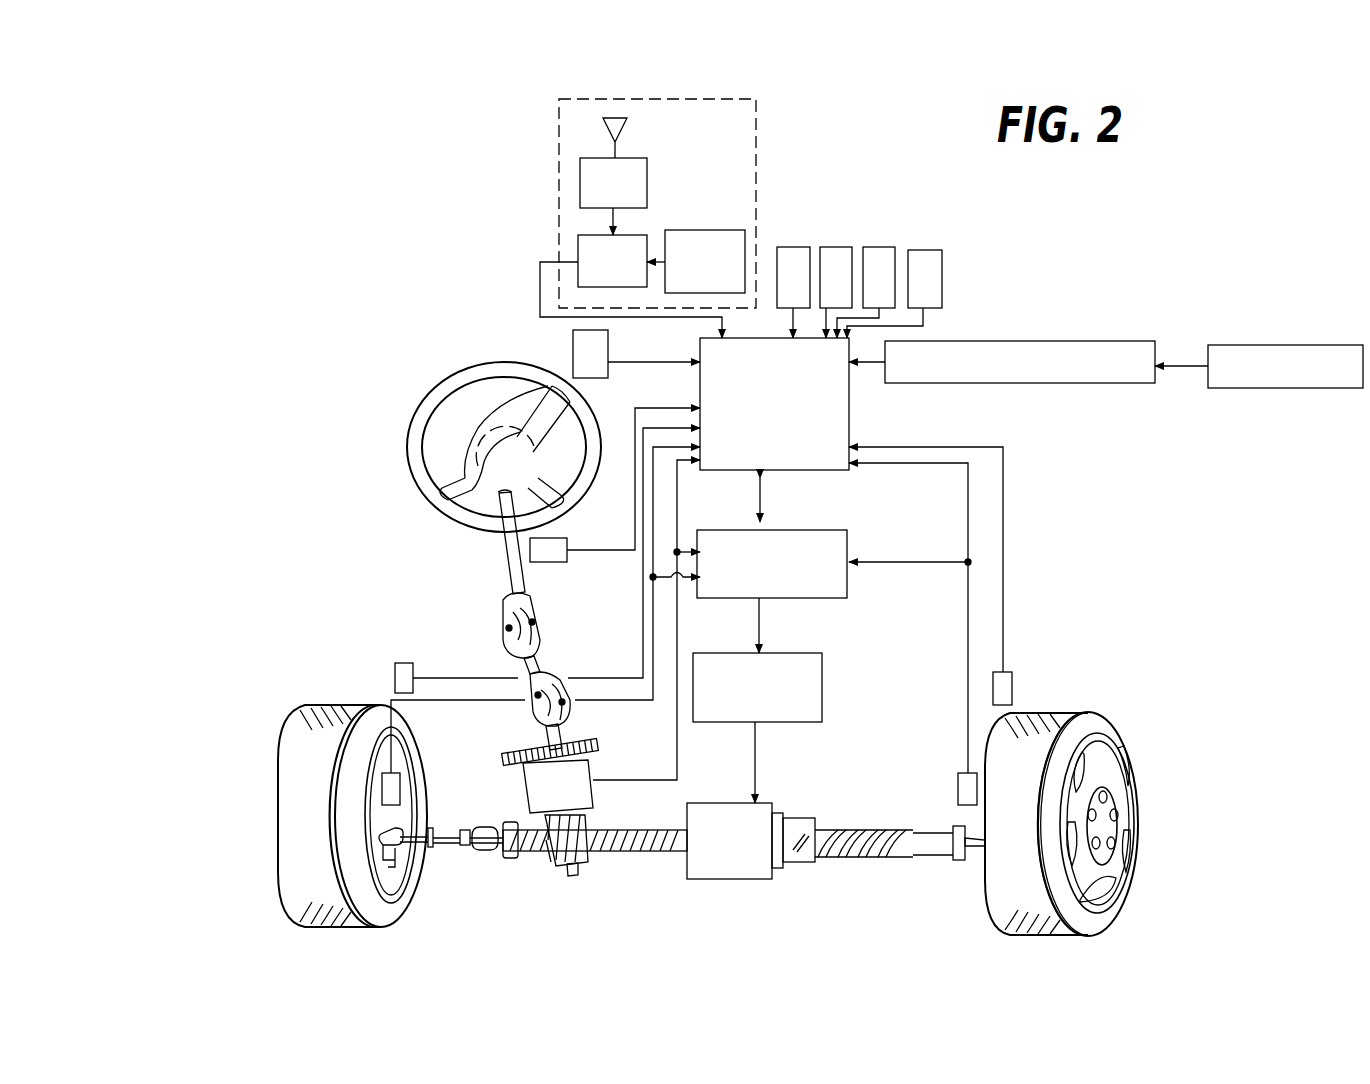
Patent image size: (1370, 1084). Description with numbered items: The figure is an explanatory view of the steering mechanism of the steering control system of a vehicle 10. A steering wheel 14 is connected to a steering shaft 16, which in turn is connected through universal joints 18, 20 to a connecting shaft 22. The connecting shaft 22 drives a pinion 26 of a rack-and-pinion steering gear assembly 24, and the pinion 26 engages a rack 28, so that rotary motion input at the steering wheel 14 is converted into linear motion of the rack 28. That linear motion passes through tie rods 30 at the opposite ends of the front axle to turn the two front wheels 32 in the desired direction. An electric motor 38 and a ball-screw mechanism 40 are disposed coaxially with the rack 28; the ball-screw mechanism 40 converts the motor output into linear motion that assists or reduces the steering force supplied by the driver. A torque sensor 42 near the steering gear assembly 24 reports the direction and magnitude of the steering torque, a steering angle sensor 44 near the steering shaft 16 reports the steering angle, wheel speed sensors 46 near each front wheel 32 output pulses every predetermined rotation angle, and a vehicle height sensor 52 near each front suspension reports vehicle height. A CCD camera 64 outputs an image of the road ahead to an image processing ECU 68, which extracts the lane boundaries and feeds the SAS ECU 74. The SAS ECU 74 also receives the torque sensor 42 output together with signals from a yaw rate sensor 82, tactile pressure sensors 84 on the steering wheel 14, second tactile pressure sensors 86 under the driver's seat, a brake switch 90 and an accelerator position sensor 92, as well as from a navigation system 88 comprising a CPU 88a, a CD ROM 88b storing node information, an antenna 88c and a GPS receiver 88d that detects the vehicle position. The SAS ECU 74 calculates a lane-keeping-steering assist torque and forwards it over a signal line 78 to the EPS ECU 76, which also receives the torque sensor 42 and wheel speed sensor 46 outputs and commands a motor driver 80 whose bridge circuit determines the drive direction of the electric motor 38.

The vehicle 10 is at (1052, 630).
The steering wheel 14 is at (430, 405).
The steering shaft 16 is at (508, 555).
The universal joint 18 is at (537, 607).
The universal joint 20 is at (520, 688).
The connecting shaft 22 is at (557, 742).
The rack-and-pinion steering gear assembly 24 is at (520, 862).
The pinion 26 is at (560, 872).
The rack 28 is at (595, 830).
The tie rod 30 is at (412, 832).
The front wheel 32 is at (342, 706).
The electric motor 38 is at (738, 879).
The ball-screw mechanism 40 is at (866, 826).
The torque sensor 42 is at (600, 770).
The steering angle sensor 44 is at (556, 536).
The wheel speed sensor 46 is at (382, 772).
The vehicle height sensor 52 is at (395, 665).
The CCD camera 64 is at (1296, 345).
The image processing ECU 68 is at (1063, 342).
The SAS ECU 74 is at (815, 472).
The EPS ECU 76 is at (847, 588).
The signal line 78 is at (760, 500).
The motor driver 80 is at (822, 680).
The yaw rate sensor 82 is at (793, 247).
The tactile pressure sensor 84 is at (573, 340).
The second tactile pressure sensor 86 is at (836, 247).
The navigation system 88 is at (758, 133).
The CPU 88a is at (638, 240).
The CD ROM 88b is at (713, 230).
The antenna 88c is at (603, 125).
The GPS receiver 88d is at (580, 183).
The brake switch 90 is at (880, 247).
The accelerator position sensor 92 is at (923, 250).